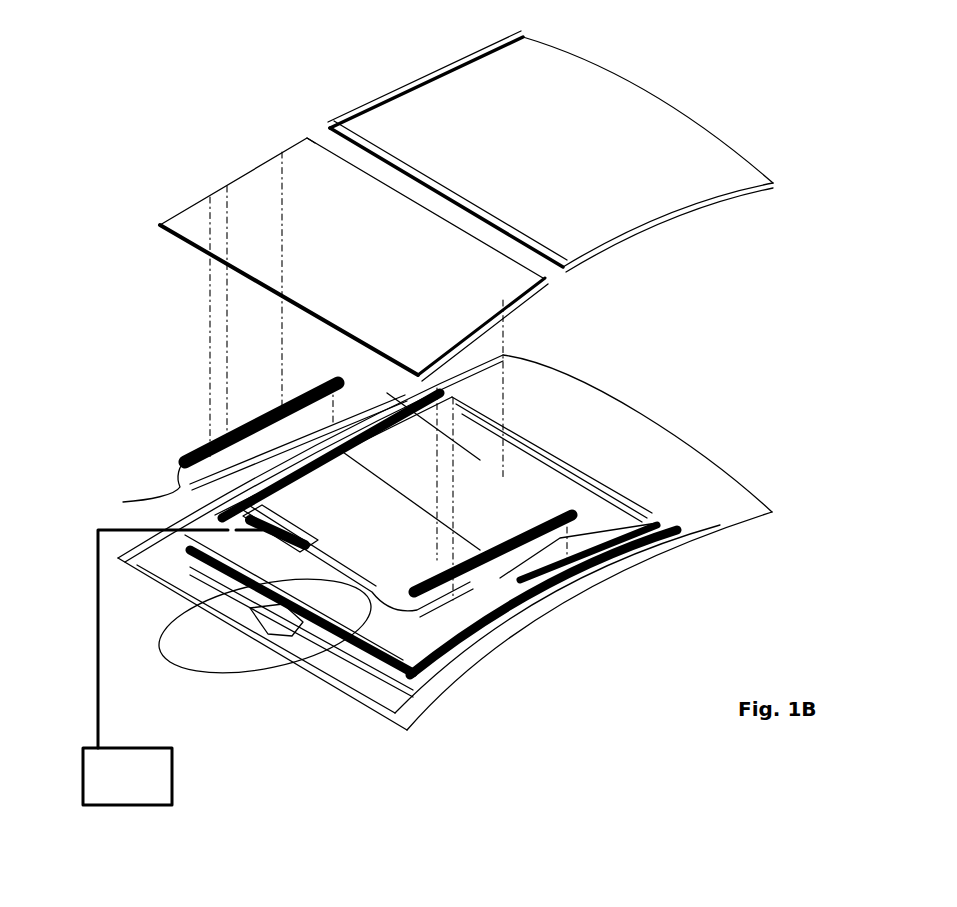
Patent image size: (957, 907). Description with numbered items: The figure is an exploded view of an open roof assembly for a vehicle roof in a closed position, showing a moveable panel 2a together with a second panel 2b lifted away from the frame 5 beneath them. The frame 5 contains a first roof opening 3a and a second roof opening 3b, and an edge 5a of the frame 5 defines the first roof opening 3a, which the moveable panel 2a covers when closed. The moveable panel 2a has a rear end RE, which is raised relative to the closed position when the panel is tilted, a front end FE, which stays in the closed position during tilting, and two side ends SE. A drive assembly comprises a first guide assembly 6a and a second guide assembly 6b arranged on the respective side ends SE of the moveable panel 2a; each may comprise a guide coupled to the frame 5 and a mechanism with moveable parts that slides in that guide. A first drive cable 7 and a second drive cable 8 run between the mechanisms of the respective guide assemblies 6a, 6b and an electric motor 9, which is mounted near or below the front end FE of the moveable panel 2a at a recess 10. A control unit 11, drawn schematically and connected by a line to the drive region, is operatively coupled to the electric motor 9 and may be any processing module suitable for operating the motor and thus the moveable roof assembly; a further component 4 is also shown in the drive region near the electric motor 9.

The moveable panel 2a is at (354, 259).
The panel 2b is at (550, 151).
The first roof opening 3a is at (361, 533).
The second roof opening 3b is at (468, 447).
The drive unit 4 is at (158, 563).
The frame 5 is at (493, 655).
The edge 5a is at (495, 580).
The first guide assembly 6a is at (512, 565).
The second guide assembly 6b is at (192, 424).
The first drive cable 7 is at (293, 660).
The second drive cable 8 is at (142, 492).
The electric motor 9 is at (190, 600).
The recess 10 is at (253, 630).
The control unit 11 is at (172, 667).
The side ends SE is at (240, 182).
The rear end RE is at (363, 172).
The front end FE is at (258, 298).